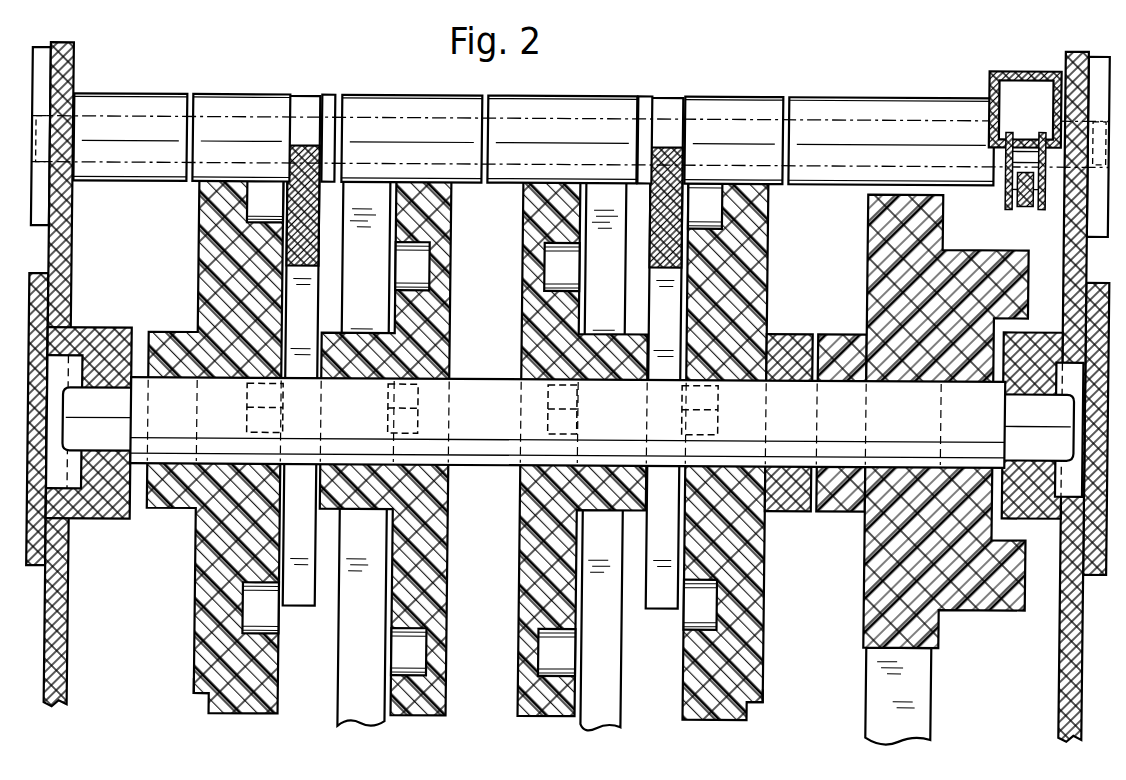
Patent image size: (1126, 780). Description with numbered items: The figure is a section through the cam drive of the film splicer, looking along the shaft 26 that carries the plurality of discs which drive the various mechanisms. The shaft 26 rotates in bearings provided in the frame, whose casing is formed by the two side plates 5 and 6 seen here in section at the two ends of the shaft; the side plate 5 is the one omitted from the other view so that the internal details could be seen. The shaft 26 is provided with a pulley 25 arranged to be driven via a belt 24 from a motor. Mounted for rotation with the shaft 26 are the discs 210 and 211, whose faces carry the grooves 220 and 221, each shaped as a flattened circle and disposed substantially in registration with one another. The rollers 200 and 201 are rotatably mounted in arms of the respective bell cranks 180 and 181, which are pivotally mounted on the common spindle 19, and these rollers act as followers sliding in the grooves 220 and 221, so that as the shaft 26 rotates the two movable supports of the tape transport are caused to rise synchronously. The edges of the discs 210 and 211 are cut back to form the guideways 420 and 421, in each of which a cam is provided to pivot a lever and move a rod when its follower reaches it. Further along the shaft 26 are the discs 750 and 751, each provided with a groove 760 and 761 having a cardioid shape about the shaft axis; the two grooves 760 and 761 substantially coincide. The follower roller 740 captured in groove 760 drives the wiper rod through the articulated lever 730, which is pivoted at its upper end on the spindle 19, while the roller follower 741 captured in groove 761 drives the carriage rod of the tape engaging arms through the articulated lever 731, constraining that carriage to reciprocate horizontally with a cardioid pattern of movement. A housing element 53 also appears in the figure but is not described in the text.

The side plate 5 is at (70, 63).
The side plate 6 is at (1066, 64).
The spindle 19 is at (134, 118).
The belt 24 is at (926, 690).
The pulley 25 is at (941, 616).
The shaft 26 is at (500, 379).
The bearing housing 53 is at (1008, 69).
The bell crank 180 is at (306, 100).
The bell crank 181 is at (668, 105).
The roller 200 is at (247, 422).
The roller 201 is at (718, 433).
The disc 210 is at (242, 716).
The disc 211 is at (726, 719).
The groove 220 is at (247, 195).
The groove 221 is at (722, 203).
The guideway 420 is at (199, 695).
The guideway 421 is at (760, 702).
The articulated lever 730 is at (370, 142).
The articulated lever 731 is at (601, 142).
The follower roller 740 is at (419, 396).
The roller follower 741 is at (548, 427).
The disc 750 is at (447, 702).
The disc 751 is at (545, 717).
The groove 760 is at (426, 271).
The groove 761 is at (546, 267).